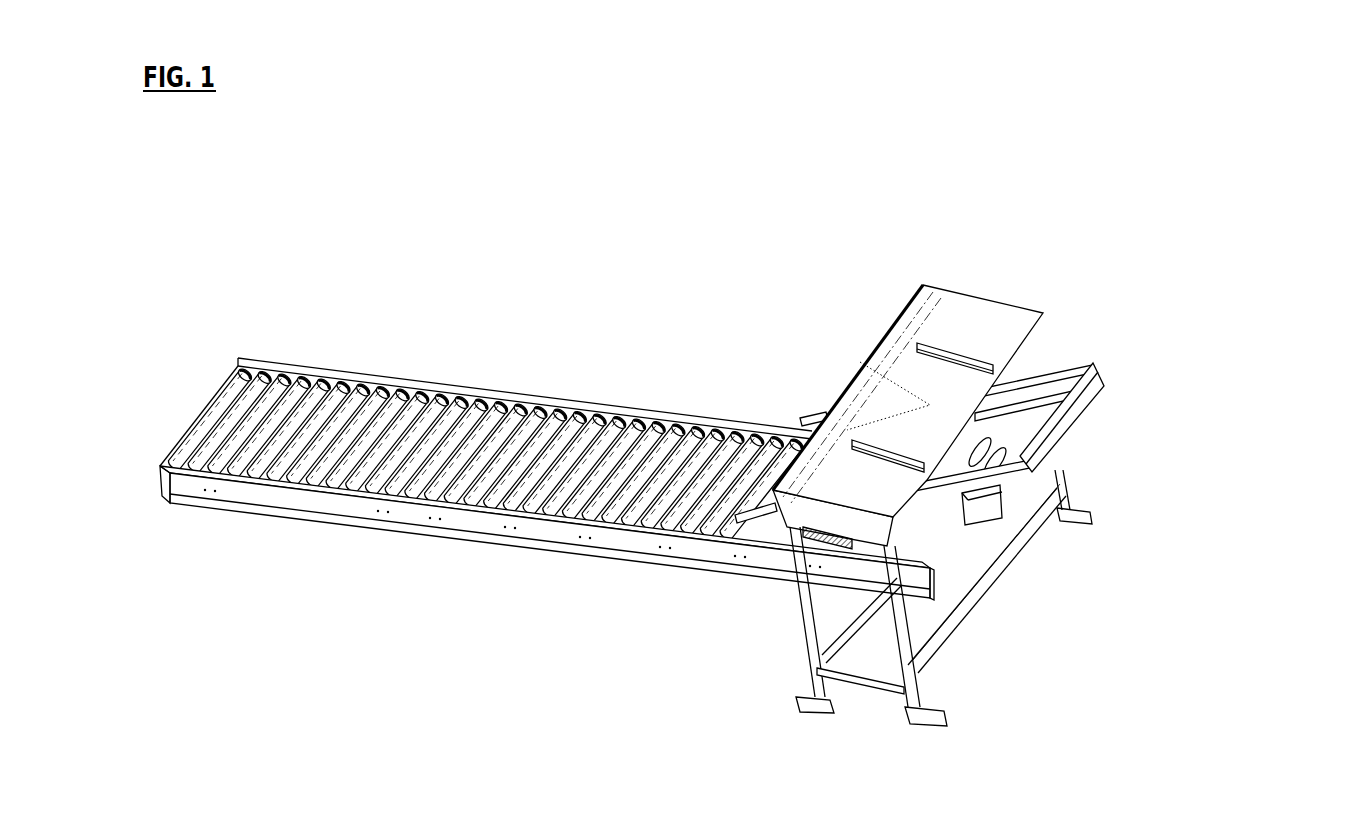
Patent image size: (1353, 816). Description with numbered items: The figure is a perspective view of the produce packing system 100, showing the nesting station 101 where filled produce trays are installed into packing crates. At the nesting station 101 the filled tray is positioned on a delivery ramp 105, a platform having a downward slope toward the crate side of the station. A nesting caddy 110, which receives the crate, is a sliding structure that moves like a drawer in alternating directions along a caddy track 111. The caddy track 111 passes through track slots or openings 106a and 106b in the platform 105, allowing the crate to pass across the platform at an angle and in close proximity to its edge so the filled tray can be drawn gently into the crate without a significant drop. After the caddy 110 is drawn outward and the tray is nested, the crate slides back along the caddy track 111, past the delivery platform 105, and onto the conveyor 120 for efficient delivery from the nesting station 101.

The produce packing system 100 is at (643, 333).
The nesting station 101 is at (918, 267).
The delivery ramp 105 is at (980, 313).
The track slot 106a is at (977, 357).
The track slot 106b is at (883, 460).
The nesting caddy 110 is at (1053, 428).
The caddy track 111 is at (1050, 373).
The conveyor 120 is at (490, 522).